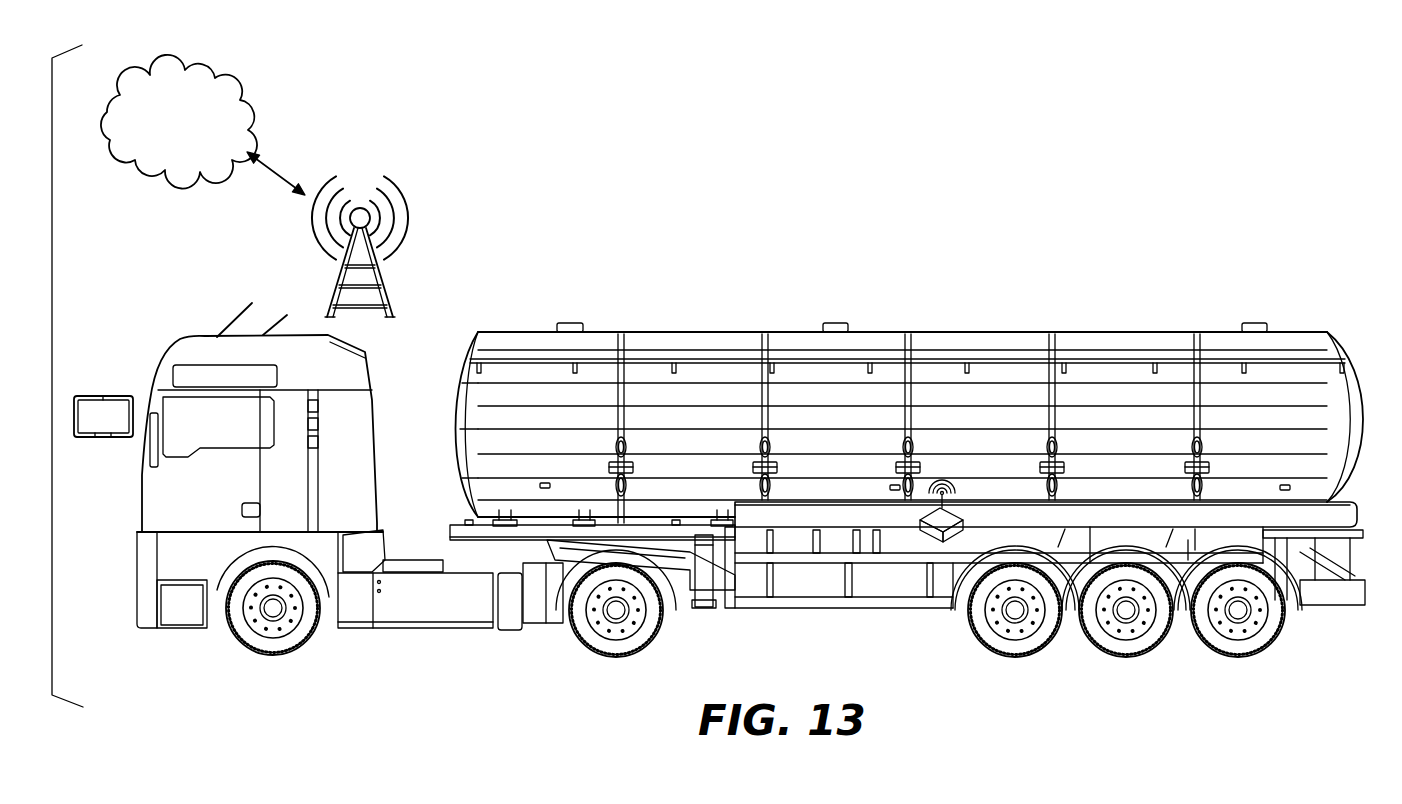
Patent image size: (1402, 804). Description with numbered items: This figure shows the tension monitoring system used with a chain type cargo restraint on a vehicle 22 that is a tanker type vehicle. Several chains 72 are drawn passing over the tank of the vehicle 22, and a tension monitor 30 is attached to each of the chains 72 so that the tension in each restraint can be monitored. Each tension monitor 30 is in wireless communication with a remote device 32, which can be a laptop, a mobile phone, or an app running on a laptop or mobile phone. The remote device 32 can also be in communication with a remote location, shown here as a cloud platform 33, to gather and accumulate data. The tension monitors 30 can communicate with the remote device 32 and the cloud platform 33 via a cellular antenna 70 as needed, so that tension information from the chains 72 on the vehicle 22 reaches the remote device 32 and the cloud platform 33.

The vehicle 22 is at (418, 615).
The tension monitor 30 is at (609, 466).
The remote device 32 is at (103, 420).
The cloud platform 33 is at (231, 92).
The cellular antenna 70 is at (309, 241).
The chain type cargo restraint 72 is at (625, 397).